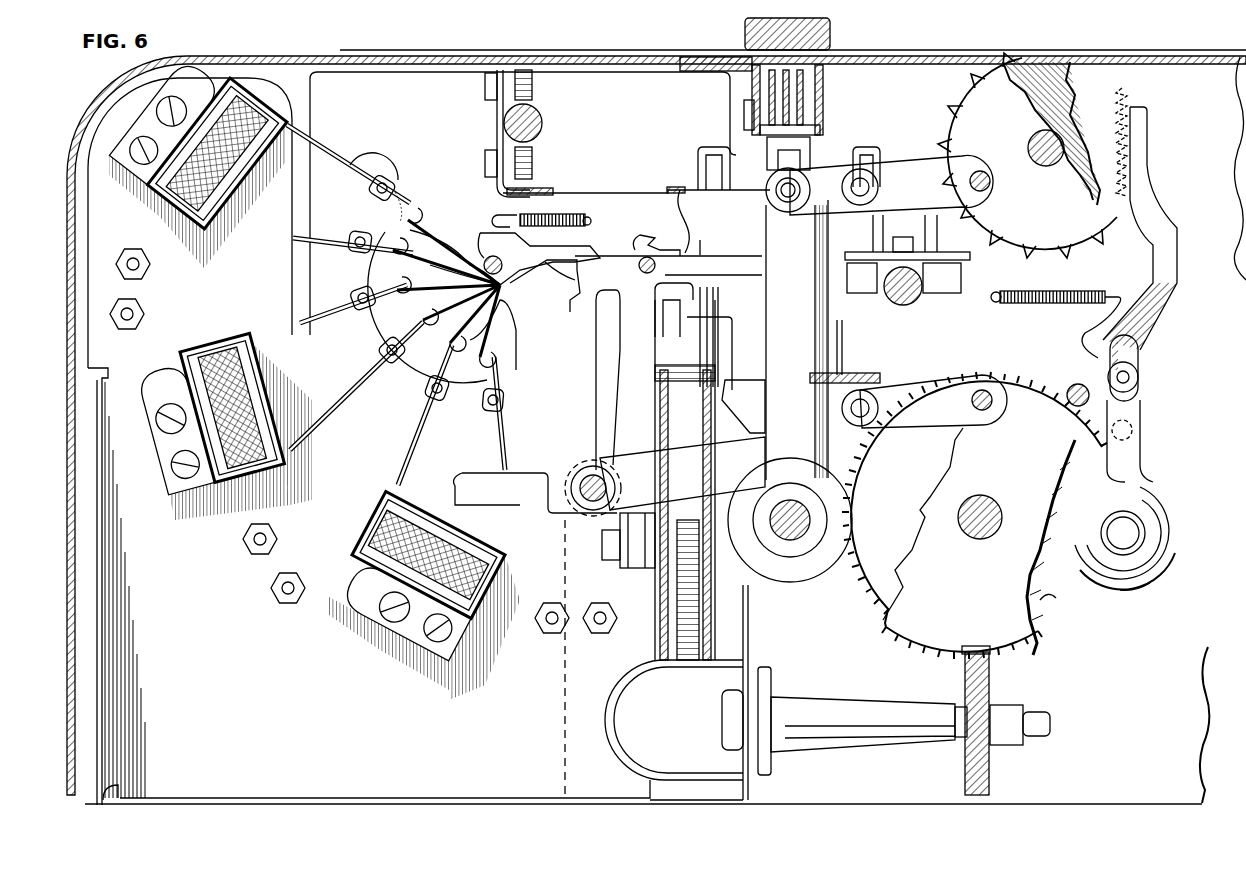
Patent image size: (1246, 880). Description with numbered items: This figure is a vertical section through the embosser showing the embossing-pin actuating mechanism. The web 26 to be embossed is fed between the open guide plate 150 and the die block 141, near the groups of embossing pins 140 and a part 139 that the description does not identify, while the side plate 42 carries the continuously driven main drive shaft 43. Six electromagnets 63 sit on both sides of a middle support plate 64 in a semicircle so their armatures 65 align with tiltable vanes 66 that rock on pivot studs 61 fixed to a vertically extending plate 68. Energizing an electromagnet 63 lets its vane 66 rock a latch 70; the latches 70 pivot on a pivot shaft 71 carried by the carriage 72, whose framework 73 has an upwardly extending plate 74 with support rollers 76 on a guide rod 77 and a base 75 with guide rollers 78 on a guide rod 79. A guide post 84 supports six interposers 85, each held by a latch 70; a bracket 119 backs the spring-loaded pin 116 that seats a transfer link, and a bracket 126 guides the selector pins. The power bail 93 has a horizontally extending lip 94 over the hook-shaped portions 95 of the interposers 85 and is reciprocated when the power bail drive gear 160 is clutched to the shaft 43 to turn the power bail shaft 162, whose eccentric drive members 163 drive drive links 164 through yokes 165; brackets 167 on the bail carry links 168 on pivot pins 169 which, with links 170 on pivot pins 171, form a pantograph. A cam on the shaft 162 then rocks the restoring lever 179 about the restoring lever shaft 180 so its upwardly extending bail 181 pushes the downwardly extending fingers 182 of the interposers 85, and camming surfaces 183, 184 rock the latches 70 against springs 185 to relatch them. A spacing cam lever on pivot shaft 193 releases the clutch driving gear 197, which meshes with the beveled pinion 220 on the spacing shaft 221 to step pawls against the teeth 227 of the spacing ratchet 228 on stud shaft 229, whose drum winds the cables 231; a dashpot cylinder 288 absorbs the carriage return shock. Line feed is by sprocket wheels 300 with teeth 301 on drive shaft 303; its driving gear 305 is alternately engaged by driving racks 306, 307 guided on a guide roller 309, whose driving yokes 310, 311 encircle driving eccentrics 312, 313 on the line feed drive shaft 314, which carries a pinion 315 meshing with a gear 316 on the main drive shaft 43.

The web 26 is at (420, 52).
The side plate 42 is at (327, 72).
The main drive shaft 43 is at (990, 504).
The pivot stud 61 is at (396, 192).
The electromagnet 63 is at (148, 200).
The middle support plate 64 is at (522, 475).
The armature 65 is at (323, 162).
The tiltable vane 66 is at (368, 226).
The vertically extending plate 68 is at (375, 156).
The latch 70 is at (437, 240).
The pivot shaft 71 is at (492, 240).
The carriage 72 is at (632, 198).
The framework 73 is at (690, 190).
The upwardly extending plate 74 is at (497, 120).
The base 75 is at (966, 256).
The support roller 76 is at (532, 85).
The guide rod 77 is at (543, 123).
The guide roller 78 is at (875, 290).
The guide rod 79 is at (898, 304).
The guide post 84 is at (672, 257).
The interposer 85 is at (668, 305).
The power bail 93 is at (842, 352).
The horizontally extending lip 94 is at (726, 307).
The hook-shaped portion 95 is at (665, 328).
The pin 116 is at (753, 291).
The bracket 119 is at (698, 153).
The bracket 126 is at (830, 137).
The contact housing 139 is at (835, 94).
The embossing pin 140 is at (755, 126).
The die block 141 is at (830, 30).
The open guide plate 150 is at (742, 52).
The power bail drive gear 160 is at (878, 612).
The power bail shaft 162 is at (810, 508).
The eccentric drive member 163 is at (772, 568).
The drive link 164 is at (840, 378).
The yoke 165 is at (800, 583).
The bracket 167 is at (760, 405).
The link 168 is at (912, 424).
The pivot pin 169 is at (975, 385).
The link 170 is at (932, 176).
The pivot pin 171 is at (990, 184).
The restoring lever 179 is at (665, 452).
The restoring lever shaft 180 is at (578, 490).
The upwardly extending bail 181 is at (596, 315).
The downwardly extending finger 182 is at (572, 294).
The camming surface 183 is at (560, 270).
The camming surface 184 is at (618, 224).
The spring 185 is at (553, 194).
The pivot shaft 193 is at (1070, 387).
The gear 197 is at (1042, 648).
The beveled pinion 220 is at (991, 680).
The spacing shaft 221 is at (1052, 724).
The teeth 227 is at (683, 620).
The spacing ratchet 228 is at (712, 645).
The stud shaft 229 is at (603, 544).
The cable 231 is at (665, 375).
The dashpot cylinder 288 is at (607, 716).
The sprocket wheel 300 is at (1068, 58).
The teeth 301 is at (1045, 46).
The drive shaft 303 is at (1046, 134).
The driving gear 305 is at (1110, 103).
The driving rack 306 is at (1140, 207).
The driving rack 307 is at (1147, 140).
The guide roller 309 is at (1131, 377).
The driving yoke 310 is at (1172, 546).
The driving yoke 311 is at (1170, 537).
The driving eccentric 312 is at (1140, 590).
The driving eccentric 313 is at (1150, 504).
The line feed drive shaft 314 is at (1140, 530).
The pinion 315 is at (1141, 480).
The gear 316 is at (1048, 590).